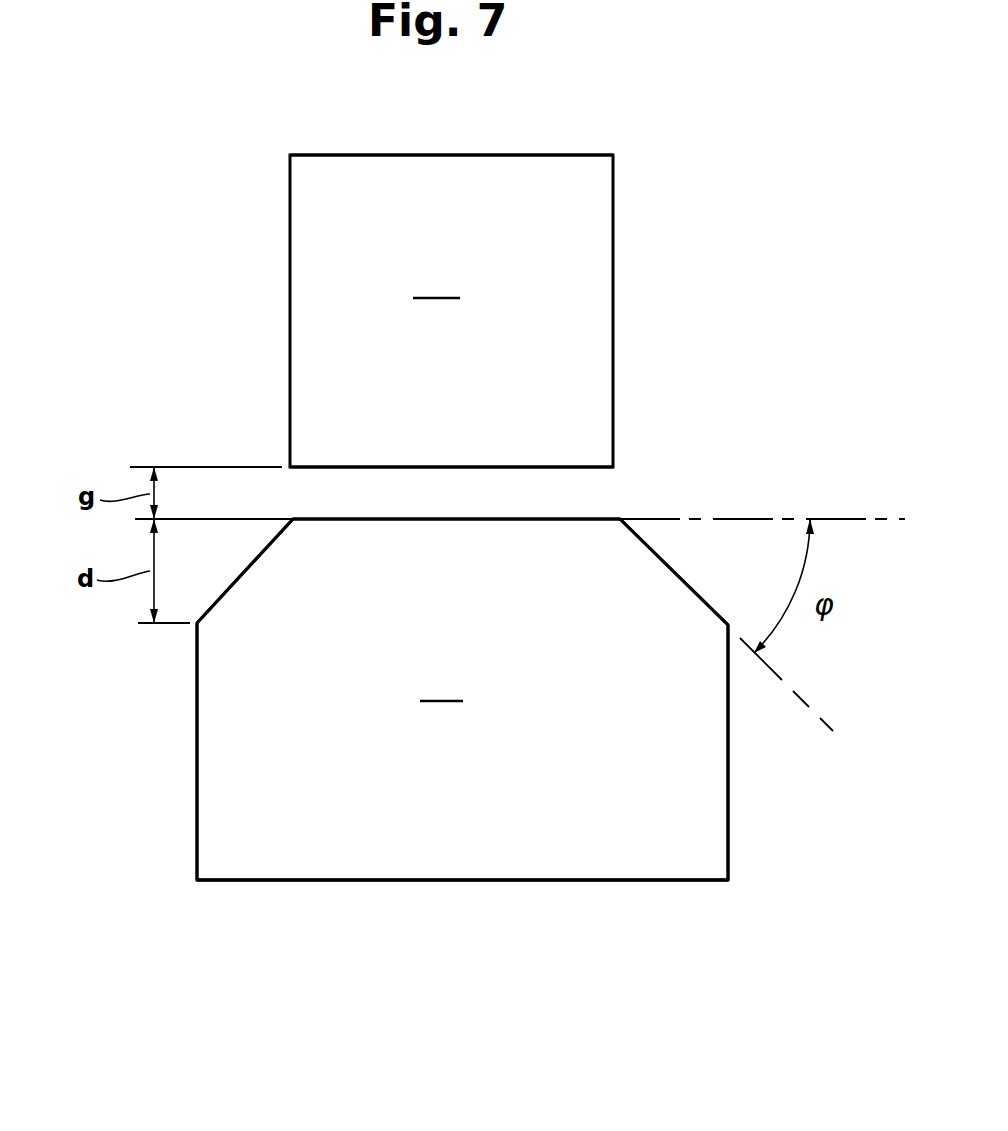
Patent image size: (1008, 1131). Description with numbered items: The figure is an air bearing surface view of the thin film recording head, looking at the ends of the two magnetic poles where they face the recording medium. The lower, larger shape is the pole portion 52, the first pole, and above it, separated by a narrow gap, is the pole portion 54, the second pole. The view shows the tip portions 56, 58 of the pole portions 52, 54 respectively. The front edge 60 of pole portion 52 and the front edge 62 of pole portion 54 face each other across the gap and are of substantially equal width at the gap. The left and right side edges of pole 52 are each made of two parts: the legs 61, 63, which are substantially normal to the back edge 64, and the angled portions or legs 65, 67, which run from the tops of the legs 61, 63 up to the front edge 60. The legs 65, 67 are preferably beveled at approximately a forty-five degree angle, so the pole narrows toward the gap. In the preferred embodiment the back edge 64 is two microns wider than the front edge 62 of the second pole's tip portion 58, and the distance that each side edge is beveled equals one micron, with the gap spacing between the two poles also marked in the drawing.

The pole portion 52 is at (508, 895).
The pole portion 54 is at (580, 155).
The tip portion 56 is at (538, 810).
The tip portion 58 is at (323, 191).
The front edge 60 is at (355, 520).
The side edge leg 61 is at (195, 800).
The front edge 62 is at (377, 465).
The side edge leg 63 is at (733, 835).
The back edge 64 is at (337, 880).
The angled leg 65 is at (684, 573).
The angled leg 67 is at (255, 562).